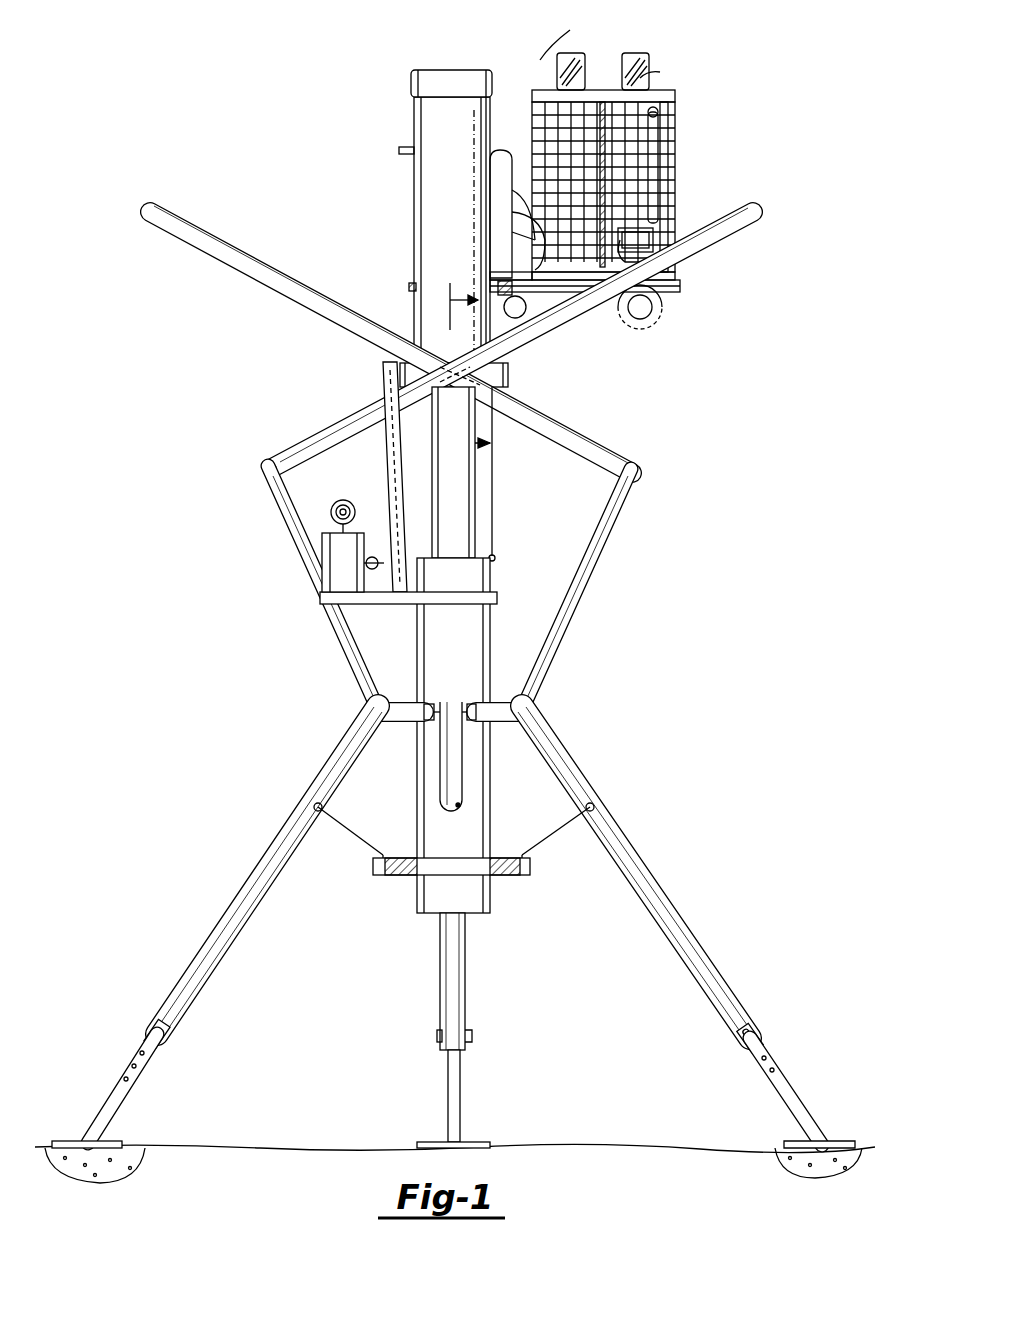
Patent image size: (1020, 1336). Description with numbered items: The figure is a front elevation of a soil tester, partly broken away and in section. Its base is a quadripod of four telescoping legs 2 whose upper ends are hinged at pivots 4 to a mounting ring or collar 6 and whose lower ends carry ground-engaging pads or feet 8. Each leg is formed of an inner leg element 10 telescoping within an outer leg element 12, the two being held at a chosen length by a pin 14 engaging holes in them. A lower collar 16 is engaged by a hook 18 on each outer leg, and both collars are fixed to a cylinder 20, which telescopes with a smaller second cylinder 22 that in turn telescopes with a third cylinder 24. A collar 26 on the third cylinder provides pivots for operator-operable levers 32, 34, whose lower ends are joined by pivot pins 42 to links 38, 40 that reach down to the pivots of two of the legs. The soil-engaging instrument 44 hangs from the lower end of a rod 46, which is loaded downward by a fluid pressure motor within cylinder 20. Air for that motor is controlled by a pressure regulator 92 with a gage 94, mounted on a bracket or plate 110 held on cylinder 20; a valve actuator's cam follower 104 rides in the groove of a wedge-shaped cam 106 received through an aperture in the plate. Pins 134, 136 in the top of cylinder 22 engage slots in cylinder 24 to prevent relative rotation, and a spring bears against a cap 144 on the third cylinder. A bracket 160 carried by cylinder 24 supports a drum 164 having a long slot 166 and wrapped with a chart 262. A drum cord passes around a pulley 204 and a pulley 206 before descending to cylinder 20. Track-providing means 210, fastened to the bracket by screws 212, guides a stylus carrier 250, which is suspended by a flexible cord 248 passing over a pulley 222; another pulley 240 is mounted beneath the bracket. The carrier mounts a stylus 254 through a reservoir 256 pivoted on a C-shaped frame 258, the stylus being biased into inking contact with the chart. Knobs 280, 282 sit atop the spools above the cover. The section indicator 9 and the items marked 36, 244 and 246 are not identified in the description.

The telescoping leg 2 is at (438, 795).
The pivot 4 is at (440, 700).
The mounting ring or collar 6 is at (520, 722).
The ground-engaging pad or foot 8 is at (110, 1141).
The section line 9 is at (465, 375).
The inner leg element 10 is at (122, 1095).
The outer leg element 12 is at (226, 948).
The pin 14 is at (168, 1032).
The lower collar 16 is at (500, 858).
The hook 18 is at (355, 850).
The cylinder 20 is at (468, 624).
The second cylinder 22 is at (465, 520).
The third cylinder 24 is at (414, 233).
The collar 26 is at (508, 376).
The lever 32 is at (178, 230).
The lever 34 is at (760, 212).
The pivot 36 is at (450, 368).
The link 38 is at (592, 555).
The link 40 is at (270, 488).
The pivot pin 42 is at (275, 462).
The soil-engaging instrument 44 is at (480, 1142).
The rod 46 is at (460, 1080).
The pressure regulator 92 is at (340, 572).
The gage 94 is at (335, 500).
The cam follower 104 is at (380, 555).
The cam 106 is at (383, 370).
The bracket or plate 110 is at (328, 604).
The pin 134 is at (400, 148).
The pin 136 is at (495, 152).
The cap 144 is at (427, 80).
The bracket 160 is at (409, 286).
The drum 164 is at (512, 212).
The slot 166 is at (600, 90).
The pulley 204 is at (505, 275).
The pulley 206 is at (500, 284).
The track-providing means 210 is at (668, 176).
The screws 212 is at (680, 288).
The pulley 222 is at (660, 112).
The pulley 240 is at (525, 315).
The line 244 is at (512, 232).
The hose 246 is at (512, 190).
The flexible cord 248 is at (658, 144).
The stylus carrier 250 is at (655, 250).
The stylus 254 is at (650, 228).
The reservoir 256 is at (660, 268).
The C-shaped frame 258 is at (655, 305).
The chart 262 is at (565, 85).
The knob 280 is at (580, 50).
The knob 282 is at (650, 72).